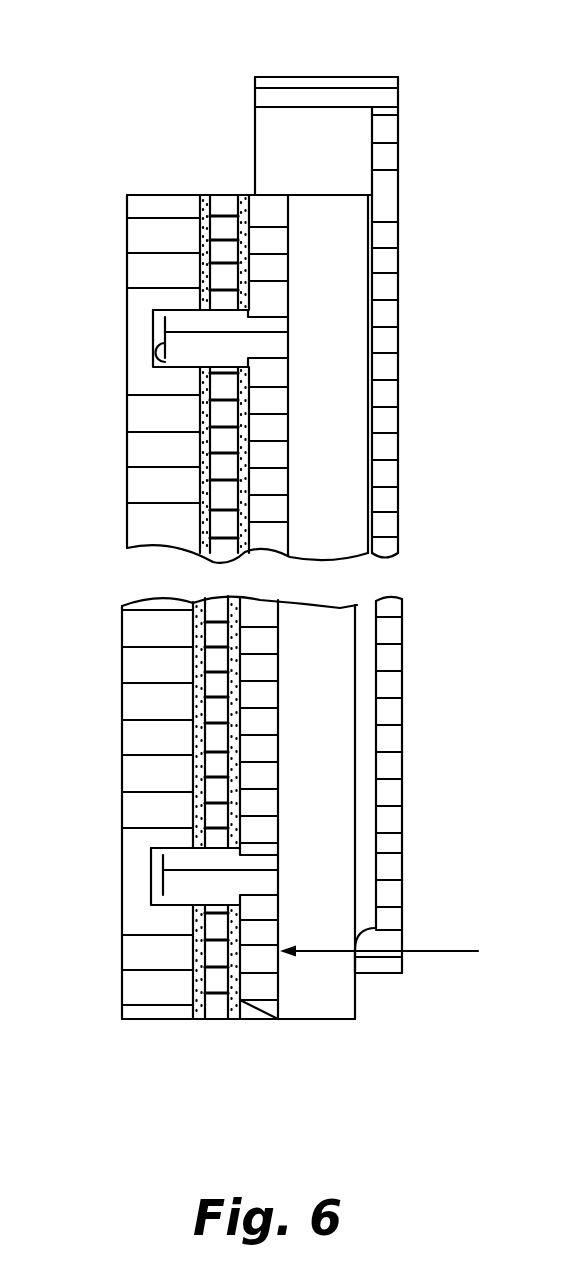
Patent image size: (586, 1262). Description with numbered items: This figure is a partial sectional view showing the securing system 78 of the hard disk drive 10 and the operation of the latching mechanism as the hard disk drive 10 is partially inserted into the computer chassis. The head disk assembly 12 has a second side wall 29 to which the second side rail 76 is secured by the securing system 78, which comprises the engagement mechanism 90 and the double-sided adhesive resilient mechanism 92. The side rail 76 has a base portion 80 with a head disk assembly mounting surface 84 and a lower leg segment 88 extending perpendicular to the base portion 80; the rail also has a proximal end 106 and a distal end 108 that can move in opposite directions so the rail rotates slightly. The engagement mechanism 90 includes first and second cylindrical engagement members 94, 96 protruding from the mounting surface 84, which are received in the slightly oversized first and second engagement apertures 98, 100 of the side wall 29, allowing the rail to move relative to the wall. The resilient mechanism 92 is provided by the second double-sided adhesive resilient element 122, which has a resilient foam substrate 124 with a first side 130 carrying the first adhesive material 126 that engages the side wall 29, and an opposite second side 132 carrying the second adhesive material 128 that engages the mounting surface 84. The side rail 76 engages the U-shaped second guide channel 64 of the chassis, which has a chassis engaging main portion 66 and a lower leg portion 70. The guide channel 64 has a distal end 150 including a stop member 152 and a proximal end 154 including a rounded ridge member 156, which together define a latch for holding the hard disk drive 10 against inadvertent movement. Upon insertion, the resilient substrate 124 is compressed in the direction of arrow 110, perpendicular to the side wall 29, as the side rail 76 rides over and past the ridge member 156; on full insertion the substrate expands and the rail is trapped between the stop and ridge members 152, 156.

The hard disk drive 10 is at (120, 182).
The head disk assembly 12 is at (112, 836).
The second side wall 29 is at (132, 690).
The second guide channel 64 is at (410, 347).
The chassis engaging main portion 66 is at (398, 537).
The lower leg portion 70 is at (355, 148).
The second side rail 76 is at (272, 1038).
The securing system 78 is at (216, 1040).
The base portion 80 is at (272, 740).
The head disk assembly mounting surface 84 is at (235, 975).
The lower leg segment 88 is at (338, 1002).
The engagement mechanism 90 is at (165, 302).
The double-sided adhesive resilient mechanism 92 is at (201, 182).
The first engagement member 94 is at (162, 852).
The second engagement member 96 is at (178, 330).
The first engagement aperture 98 is at (165, 872).
The second engagement aperture 100 is at (155, 360).
The proximal end 106 is at (325, 1022).
The distal end 108 is at (338, 197).
The arrow 110 is at (466, 951).
The second double-sided adhesive resilient element 122 is at (238, 180).
The resilient substrate 124 is at (228, 805).
The first adhesive material 126 is at (195, 765).
The second adhesive material 128 is at (232, 668).
The first side 130 is at (205, 462).
The second side 132 is at (245, 480).
The distal end 150 is at (392, 77).
The stop member 152 is at (337, 88).
The proximal end 154 is at (397, 974).
The rounded ridge member 156 is at (368, 940).